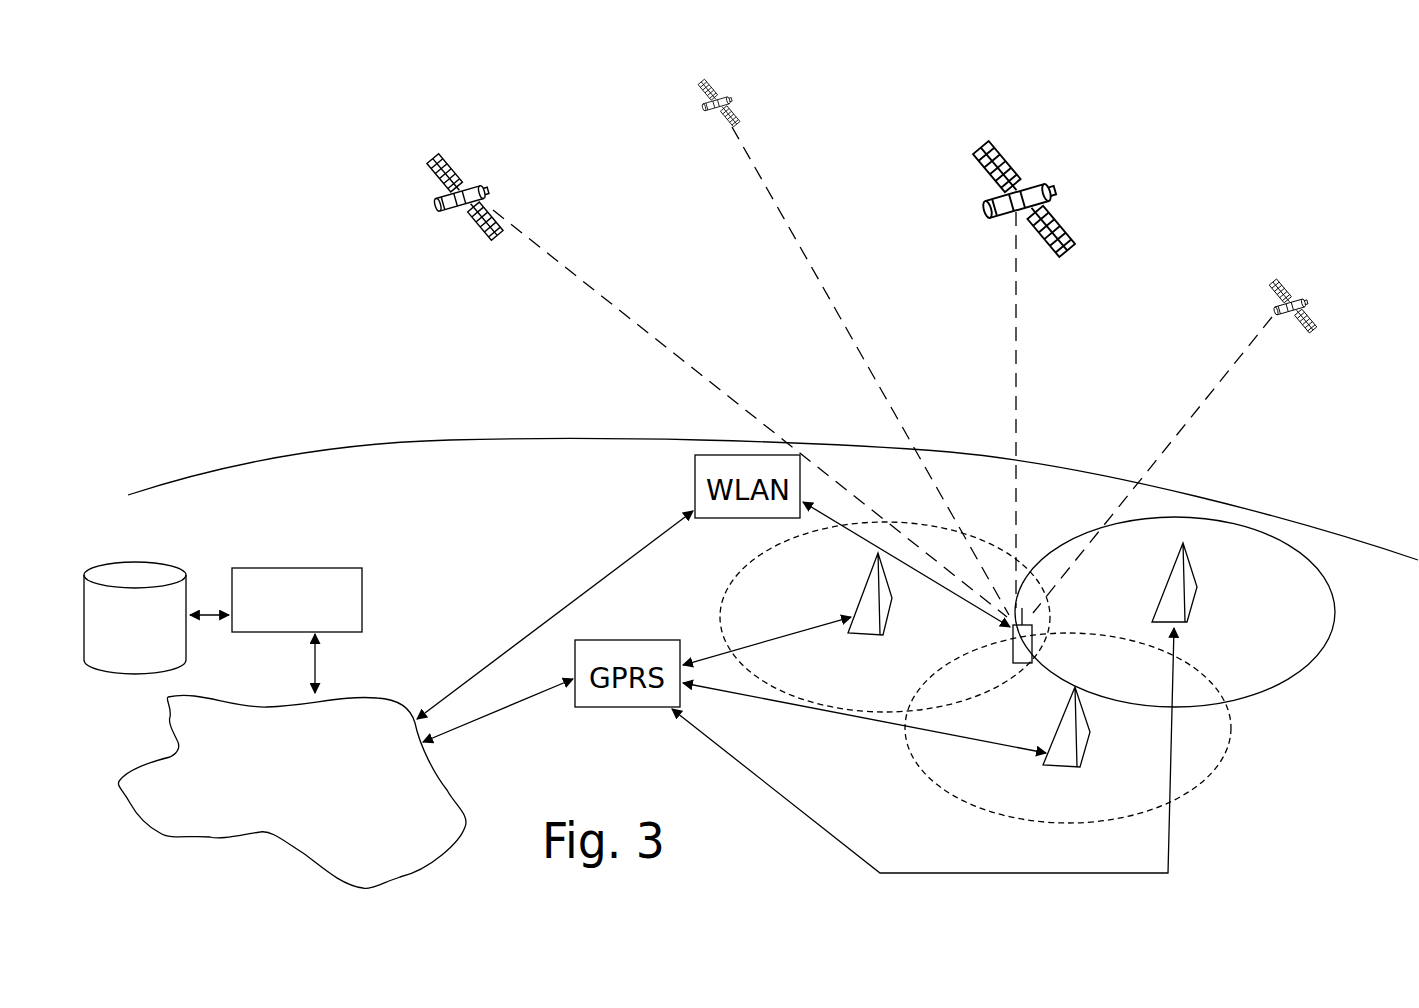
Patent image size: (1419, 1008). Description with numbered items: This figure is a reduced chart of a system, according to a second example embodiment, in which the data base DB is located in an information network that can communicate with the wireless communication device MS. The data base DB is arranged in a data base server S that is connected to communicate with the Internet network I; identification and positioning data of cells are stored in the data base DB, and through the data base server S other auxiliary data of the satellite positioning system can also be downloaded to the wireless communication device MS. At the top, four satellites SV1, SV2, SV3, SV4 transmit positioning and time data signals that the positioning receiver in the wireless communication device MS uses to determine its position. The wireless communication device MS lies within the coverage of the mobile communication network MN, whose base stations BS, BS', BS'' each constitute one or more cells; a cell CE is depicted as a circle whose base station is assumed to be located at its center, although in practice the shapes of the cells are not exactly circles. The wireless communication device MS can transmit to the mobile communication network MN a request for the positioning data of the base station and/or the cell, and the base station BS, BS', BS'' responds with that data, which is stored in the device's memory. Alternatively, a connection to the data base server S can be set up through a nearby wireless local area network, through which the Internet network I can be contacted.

The satellite SV1 is at (693, 369).
The satellite SV2 is at (844, 327).
The satellite SV3 is at (1020, 357).
The satellite SV4 is at (1182, 422).
The data base DB is at (165, 571).
The data base server S is at (362, 600).
The Internet network I is at (383, 697).
The cell CE is at (722, 613).
The base station BS' is at (852, 626).
The wireless communication device MS is at (1032, 643).
The base station BS is at (1216, 601).
The base station BS'' is at (1066, 780).
The mobile communication network MN is at (1236, 826).